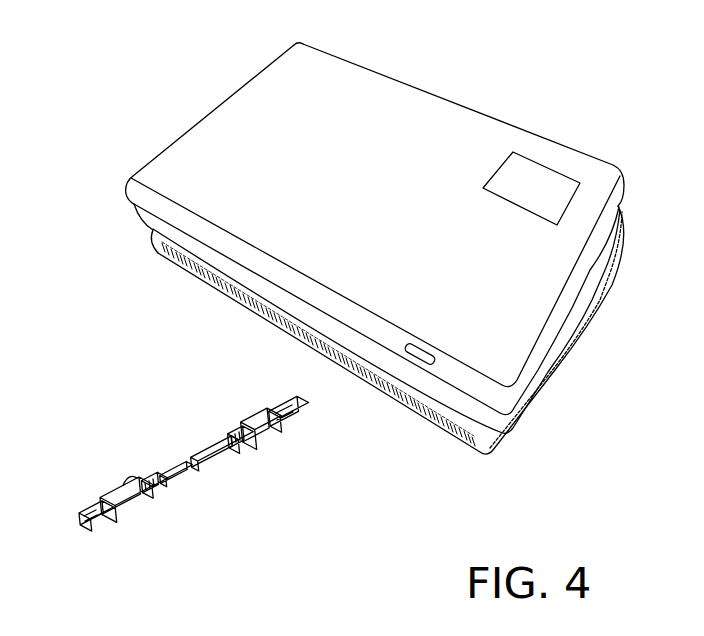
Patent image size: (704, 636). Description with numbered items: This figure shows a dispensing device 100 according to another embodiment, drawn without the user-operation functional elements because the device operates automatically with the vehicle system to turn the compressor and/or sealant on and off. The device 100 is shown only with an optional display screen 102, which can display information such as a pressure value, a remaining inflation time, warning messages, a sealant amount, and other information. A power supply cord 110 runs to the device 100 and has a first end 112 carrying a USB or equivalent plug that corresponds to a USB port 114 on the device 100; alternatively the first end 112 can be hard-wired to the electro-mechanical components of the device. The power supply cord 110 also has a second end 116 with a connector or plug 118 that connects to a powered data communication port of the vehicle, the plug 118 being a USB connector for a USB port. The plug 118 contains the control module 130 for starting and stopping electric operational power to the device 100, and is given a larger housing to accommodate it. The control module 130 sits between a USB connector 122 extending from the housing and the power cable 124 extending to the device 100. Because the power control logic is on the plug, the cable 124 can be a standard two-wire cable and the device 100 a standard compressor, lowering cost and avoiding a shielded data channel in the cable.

The dispensing device 100 is at (506, 108).
The display screen 102 is at (553, 177).
The USB port 114 is at (430, 356).
The power supply cord 110 is at (195, 443).
The first end 112 is at (255, 408).
The second end 116 is at (126, 523).
The plug 118 is at (100, 500).
The USB connector 122 is at (89, 532).
The power cable 124 is at (177, 483).
The control module 130 is at (131, 472).